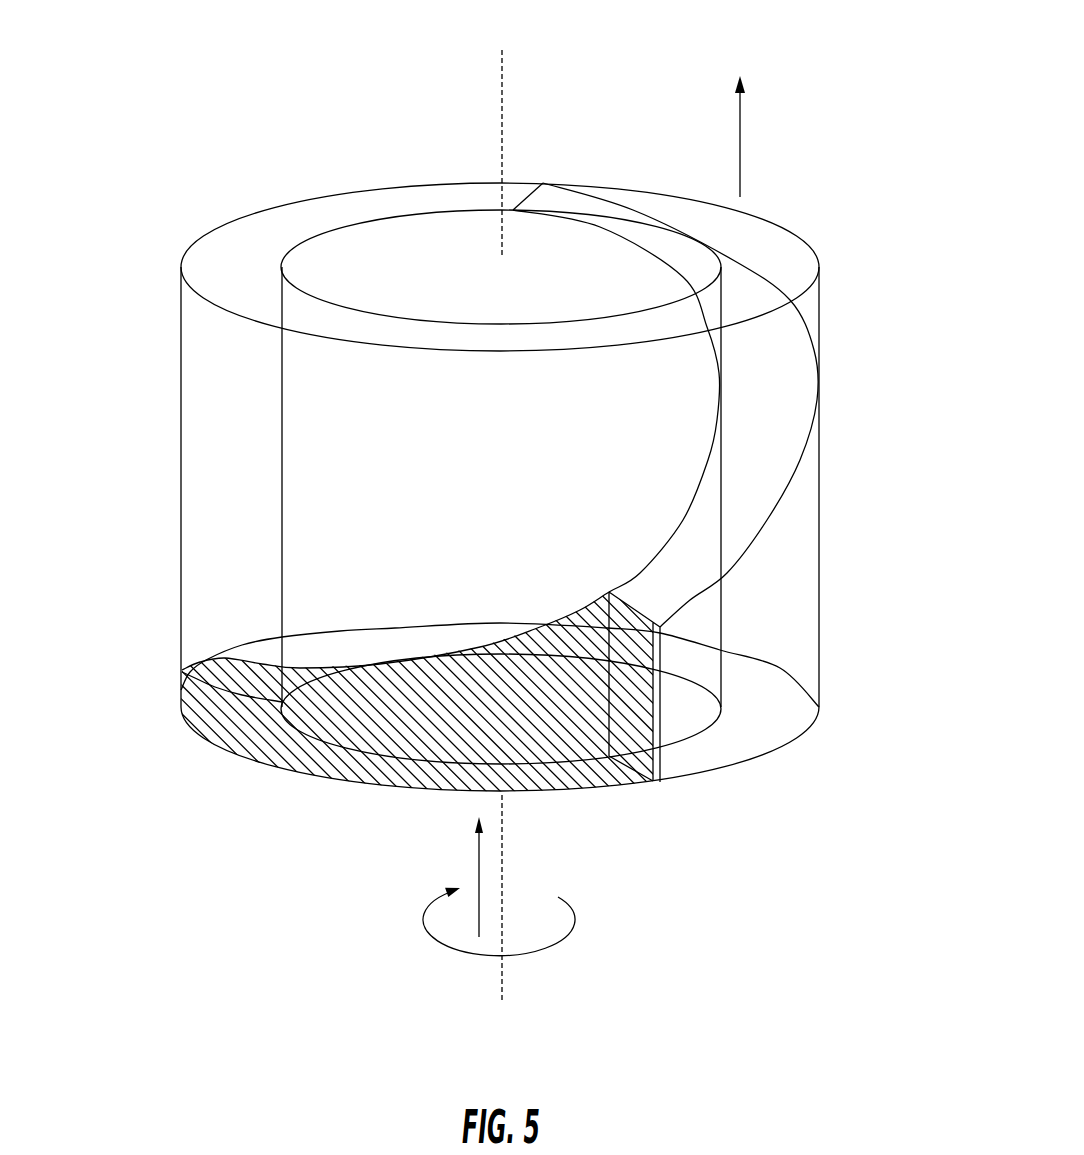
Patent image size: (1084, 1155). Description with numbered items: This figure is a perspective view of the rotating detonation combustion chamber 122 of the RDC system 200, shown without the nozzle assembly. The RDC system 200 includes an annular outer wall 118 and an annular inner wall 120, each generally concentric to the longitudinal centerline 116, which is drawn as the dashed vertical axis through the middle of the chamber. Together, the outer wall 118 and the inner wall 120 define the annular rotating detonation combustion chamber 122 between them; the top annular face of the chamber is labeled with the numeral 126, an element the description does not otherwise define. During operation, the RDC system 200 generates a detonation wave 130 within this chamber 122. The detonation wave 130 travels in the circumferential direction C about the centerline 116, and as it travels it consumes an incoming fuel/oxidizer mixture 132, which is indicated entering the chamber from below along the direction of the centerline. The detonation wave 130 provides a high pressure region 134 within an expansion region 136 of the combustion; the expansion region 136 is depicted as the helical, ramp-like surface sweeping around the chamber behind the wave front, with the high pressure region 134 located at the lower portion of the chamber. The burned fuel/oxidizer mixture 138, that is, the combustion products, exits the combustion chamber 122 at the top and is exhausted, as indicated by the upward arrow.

The RDC system 200 is at (653, 86).
The longitudinal centerline 116 is at (500, 131).
The annular outer wall 118 is at (181, 312).
The annular inner wall 120 is at (282, 521).
The rotating detonation combustion chamber 122 is at (220, 468).
The top surface 126 is at (253, 240).
The detonation wave 130 is at (662, 770).
The incoming fuel/oxidizer mixture 132 is at (478, 860).
The high pressure region 134 is at (772, 712).
The expansion region 136 is at (783, 422).
The burned fuel/oxidizer mixture 138 is at (740, 153).